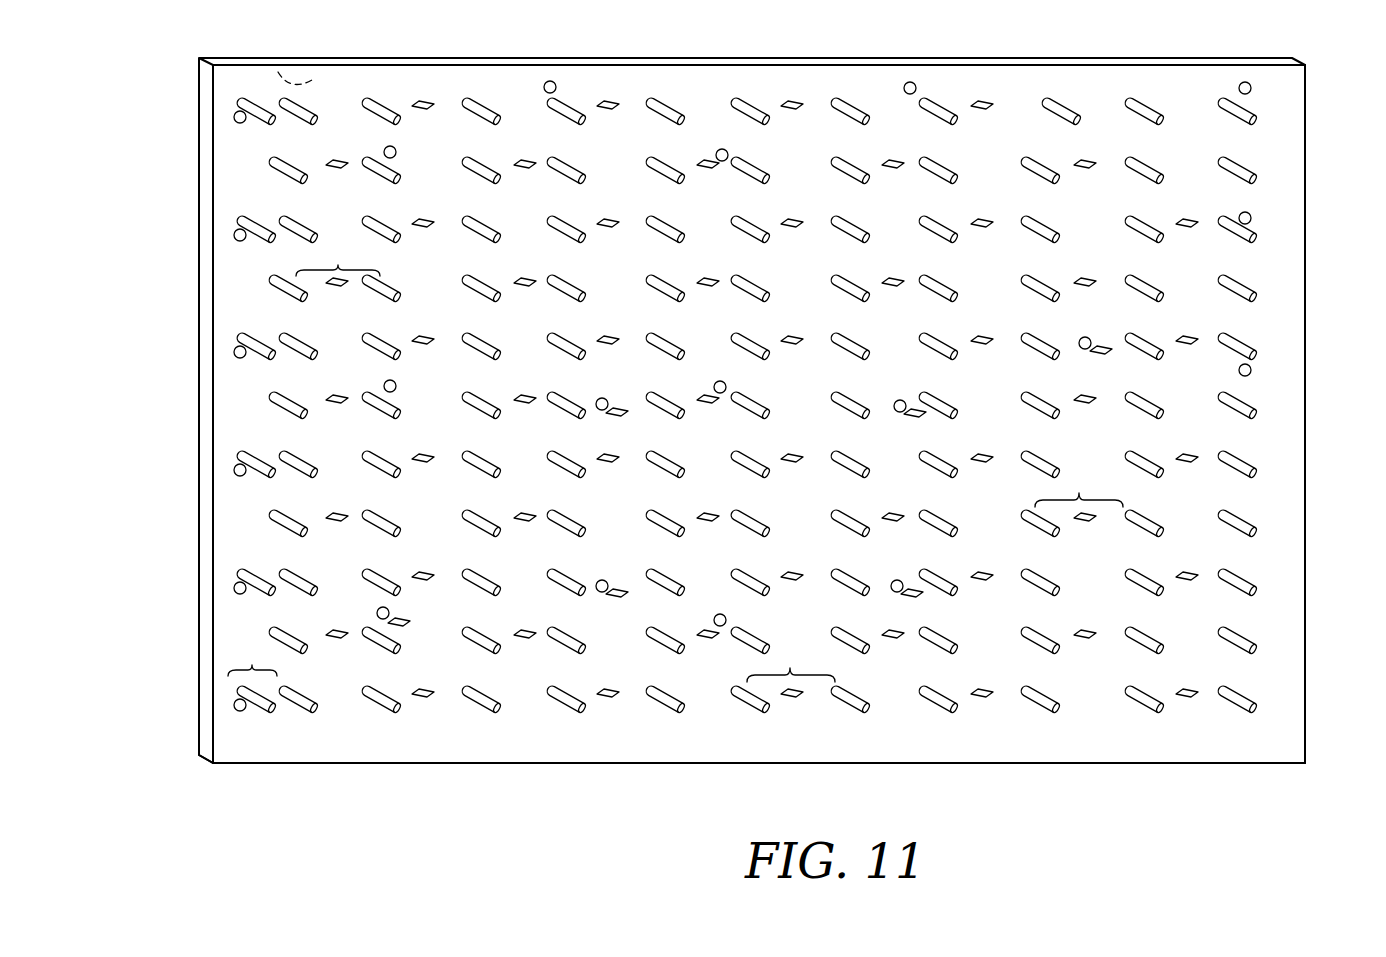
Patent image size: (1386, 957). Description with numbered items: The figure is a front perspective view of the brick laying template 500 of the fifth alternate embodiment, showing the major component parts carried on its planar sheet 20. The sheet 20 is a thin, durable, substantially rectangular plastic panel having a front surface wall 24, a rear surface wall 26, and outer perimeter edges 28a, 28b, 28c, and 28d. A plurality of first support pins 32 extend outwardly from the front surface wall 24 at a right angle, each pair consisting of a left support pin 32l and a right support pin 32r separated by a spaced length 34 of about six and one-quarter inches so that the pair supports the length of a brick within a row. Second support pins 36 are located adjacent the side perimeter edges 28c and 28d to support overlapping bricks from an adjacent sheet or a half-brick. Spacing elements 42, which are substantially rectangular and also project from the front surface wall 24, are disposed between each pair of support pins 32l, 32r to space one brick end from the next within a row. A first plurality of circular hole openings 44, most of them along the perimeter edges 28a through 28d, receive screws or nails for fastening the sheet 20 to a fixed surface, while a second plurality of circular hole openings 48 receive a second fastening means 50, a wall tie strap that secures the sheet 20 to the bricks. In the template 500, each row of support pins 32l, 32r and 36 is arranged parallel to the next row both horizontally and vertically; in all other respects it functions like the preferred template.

The planar sheet 20 is at (1083, 86).
The front surface wall 24 is at (697, 112).
The rear surface wall 26 is at (312, 80).
The outer perimeter edge 28a is at (407, 63).
The outer perimeter edge 28b is at (200, 732).
The side perimeter edge 28c is at (208, 485).
The side perimeter edge 28d is at (1312, 291).
The first support pin 32 is at (850, 228).
The left first support pin 32l is at (292, 295).
The right first support pin 32r is at (390, 292).
The spaced length 34 is at (675, 456).
The second support pin 36 is at (258, 233).
The spacing element 42 is at (335, 158).
The circular hole opening 44 is at (240, 358).
The circular hole opening 48 is at (606, 402).
The second fastening means 50 is at (618, 407).
The brick laying template 500 is at (1380, 126).